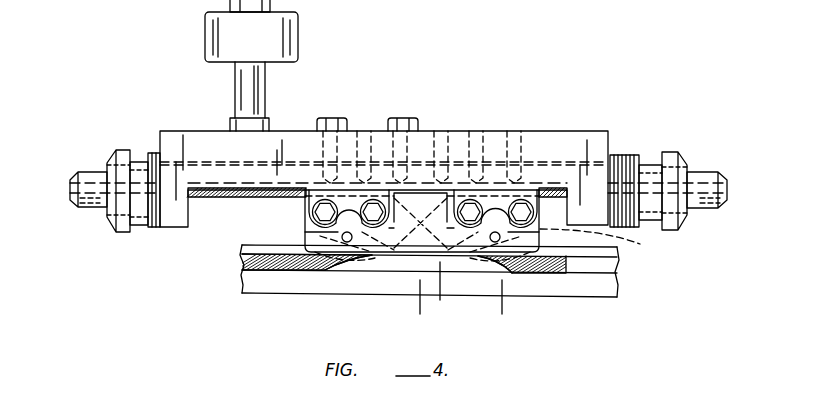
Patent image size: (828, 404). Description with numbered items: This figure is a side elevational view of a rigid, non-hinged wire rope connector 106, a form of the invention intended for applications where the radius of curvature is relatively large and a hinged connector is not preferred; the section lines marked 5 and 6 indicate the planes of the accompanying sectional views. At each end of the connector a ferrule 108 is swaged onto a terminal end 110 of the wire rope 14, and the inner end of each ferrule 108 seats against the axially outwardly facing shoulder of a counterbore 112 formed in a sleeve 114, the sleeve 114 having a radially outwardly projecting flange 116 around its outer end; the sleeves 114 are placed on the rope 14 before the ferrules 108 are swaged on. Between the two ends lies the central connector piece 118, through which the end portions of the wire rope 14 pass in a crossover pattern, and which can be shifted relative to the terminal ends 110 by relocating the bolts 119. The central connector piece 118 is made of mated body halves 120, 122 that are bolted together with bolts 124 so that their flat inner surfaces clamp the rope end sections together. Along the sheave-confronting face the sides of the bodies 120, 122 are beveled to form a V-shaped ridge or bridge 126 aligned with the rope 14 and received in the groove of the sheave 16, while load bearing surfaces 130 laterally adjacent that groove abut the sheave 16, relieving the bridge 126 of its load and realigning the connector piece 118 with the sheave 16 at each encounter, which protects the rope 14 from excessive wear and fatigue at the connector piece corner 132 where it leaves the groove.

The rigid connector 106 is at (186, 94).
The ferrule 108 is at (78, 172).
The terminal end 110 is at (92, 208).
The counterbore 112 is at (142, 152).
The sleeve 114 is at (142, 232).
The flange 116 is at (116, 152).
The central connector piece 118 is at (296, 212).
The bolt 119 is at (316, 123).
The bolt 124 is at (373, 200).
The body half 122 is at (643, 244).
The body half 120 is at (620, 251).
The load bearing surface 130 is at (606, 269).
The sheave 16 is at (236, 245).
The wire rope 14 is at (244, 265).
The connector piece corner 132 is at (332, 262).
The V-shaped ridge or bridge 126 is at (440, 300).
The section line FIG. 5 is at (420, 314).
The section line FIG. 6 is at (502, 314).